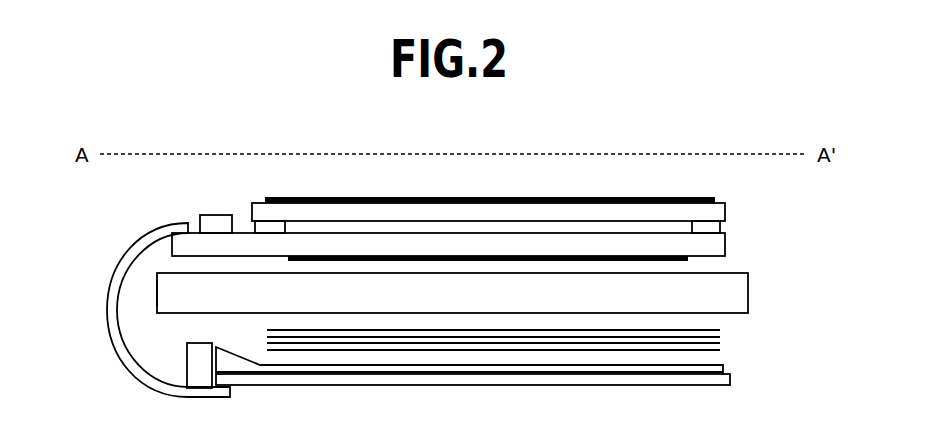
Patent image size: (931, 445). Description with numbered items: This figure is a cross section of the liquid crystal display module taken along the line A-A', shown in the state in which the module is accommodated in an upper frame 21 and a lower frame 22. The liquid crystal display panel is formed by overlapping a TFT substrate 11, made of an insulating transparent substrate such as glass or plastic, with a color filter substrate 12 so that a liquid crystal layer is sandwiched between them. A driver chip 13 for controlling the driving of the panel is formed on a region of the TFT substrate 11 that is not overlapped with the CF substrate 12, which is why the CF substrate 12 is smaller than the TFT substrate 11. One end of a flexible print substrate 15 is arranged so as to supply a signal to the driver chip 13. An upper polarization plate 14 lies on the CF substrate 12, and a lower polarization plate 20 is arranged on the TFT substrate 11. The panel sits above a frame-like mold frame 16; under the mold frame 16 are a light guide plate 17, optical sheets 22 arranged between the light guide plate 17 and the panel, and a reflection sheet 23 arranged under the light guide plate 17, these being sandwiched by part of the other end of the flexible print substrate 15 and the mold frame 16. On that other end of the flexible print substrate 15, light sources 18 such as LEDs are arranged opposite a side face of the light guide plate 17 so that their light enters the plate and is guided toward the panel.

The TFT substrate 11 is at (723, 240).
The color filter substrate 12 is at (723, 204).
The driver chip 13 is at (208, 223).
The upper polarization plate 14 is at (693, 199).
The flexible print substrate 15 is at (123, 257).
The mold frame 16 is at (163, 292).
The light guide plate 17 is at (725, 367).
The light sources 18 is at (740, 292).
The lower polarization plate 20 is at (693, 258).
The upper frame 21 is at (720, 227).
The optical sheets 22 is at (725, 323).
The reflection sheet 23 is at (725, 377).